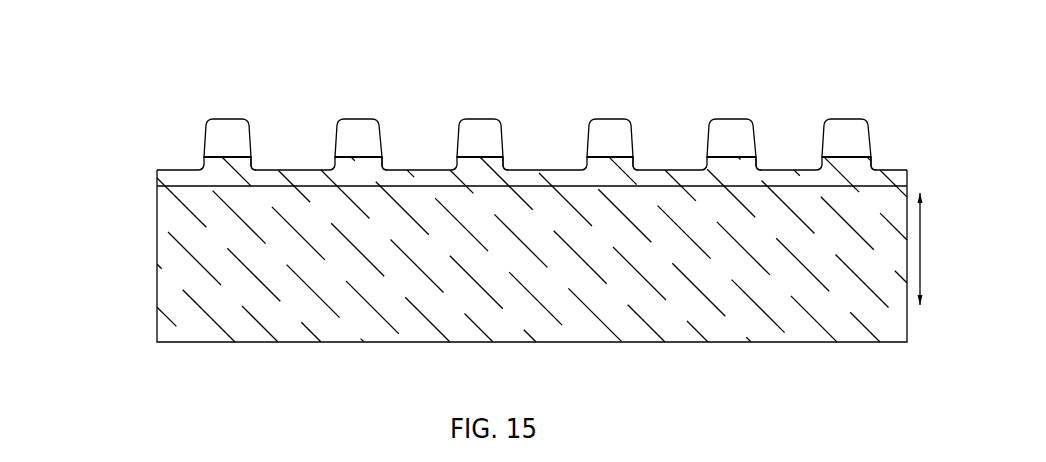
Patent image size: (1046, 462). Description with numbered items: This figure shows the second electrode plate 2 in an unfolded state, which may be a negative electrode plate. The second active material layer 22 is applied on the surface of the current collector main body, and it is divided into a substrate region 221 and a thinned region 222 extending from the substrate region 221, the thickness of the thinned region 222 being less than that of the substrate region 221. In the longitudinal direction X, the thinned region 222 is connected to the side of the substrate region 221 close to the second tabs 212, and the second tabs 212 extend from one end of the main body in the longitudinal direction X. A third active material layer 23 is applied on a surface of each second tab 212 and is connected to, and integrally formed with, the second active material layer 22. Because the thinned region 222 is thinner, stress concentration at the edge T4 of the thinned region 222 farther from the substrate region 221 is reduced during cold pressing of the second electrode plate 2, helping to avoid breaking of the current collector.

The second electrode plate 2 is at (150, 50).
The second active material layer 22 is at (93, 184).
The substrate region 221 is at (182, 267).
The thinned region 222 is at (196, 184).
The second tab 212 is at (226, 126).
The third active material layer 23 is at (252, 159).
The edge of the thinned region T4 is at (181, 169).
The longitudinal direction X is at (930, 249).